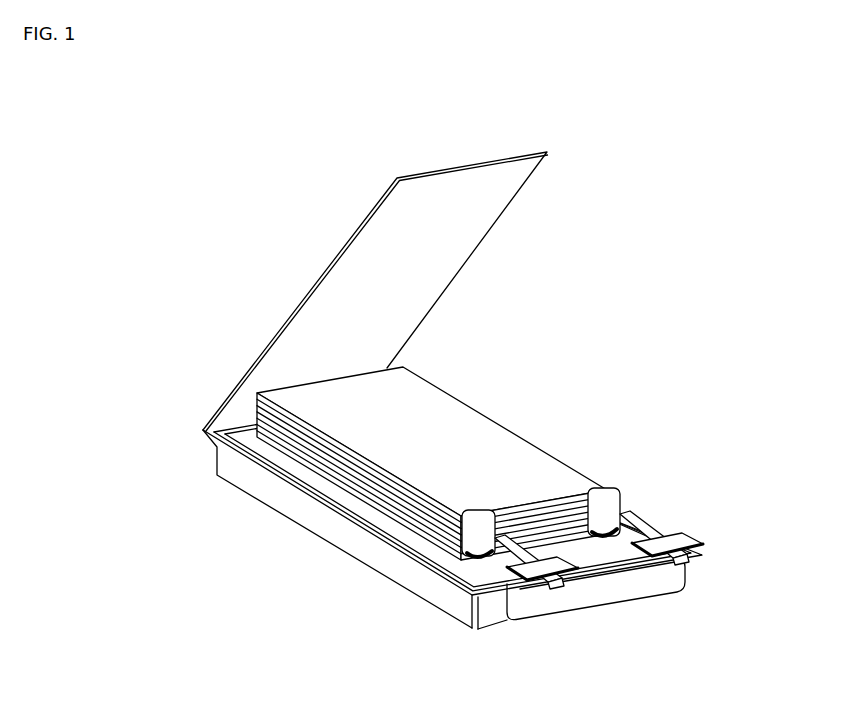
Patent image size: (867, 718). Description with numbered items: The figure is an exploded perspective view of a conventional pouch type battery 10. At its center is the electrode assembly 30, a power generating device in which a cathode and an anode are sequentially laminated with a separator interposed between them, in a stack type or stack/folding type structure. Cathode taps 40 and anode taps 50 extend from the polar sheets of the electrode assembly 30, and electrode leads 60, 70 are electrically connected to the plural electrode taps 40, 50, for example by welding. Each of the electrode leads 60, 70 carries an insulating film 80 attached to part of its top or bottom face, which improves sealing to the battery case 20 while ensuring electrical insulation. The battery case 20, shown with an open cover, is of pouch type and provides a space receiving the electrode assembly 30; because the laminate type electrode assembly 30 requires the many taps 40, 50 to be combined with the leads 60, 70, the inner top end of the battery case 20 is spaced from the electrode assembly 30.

The pouch type battery 10 is at (211, 230).
The battery case 20 is at (203, 430).
The electrode assembly 30 is at (510, 381).
The cathode tap 40 is at (406, 580).
The anode tap 50 is at (620, 505).
The electrode lead 60 is at (458, 597).
The electrode lead 70 is at (665, 527).
The insulating film 80 is at (514, 614).